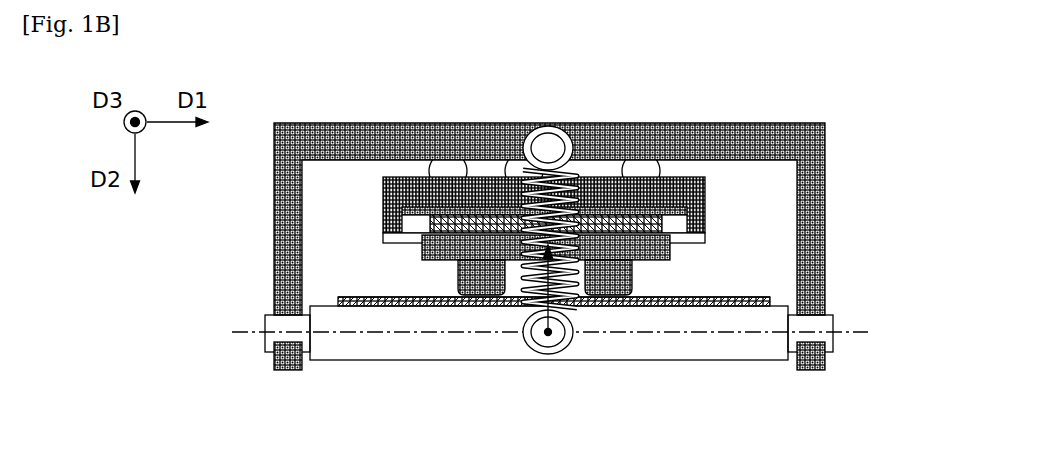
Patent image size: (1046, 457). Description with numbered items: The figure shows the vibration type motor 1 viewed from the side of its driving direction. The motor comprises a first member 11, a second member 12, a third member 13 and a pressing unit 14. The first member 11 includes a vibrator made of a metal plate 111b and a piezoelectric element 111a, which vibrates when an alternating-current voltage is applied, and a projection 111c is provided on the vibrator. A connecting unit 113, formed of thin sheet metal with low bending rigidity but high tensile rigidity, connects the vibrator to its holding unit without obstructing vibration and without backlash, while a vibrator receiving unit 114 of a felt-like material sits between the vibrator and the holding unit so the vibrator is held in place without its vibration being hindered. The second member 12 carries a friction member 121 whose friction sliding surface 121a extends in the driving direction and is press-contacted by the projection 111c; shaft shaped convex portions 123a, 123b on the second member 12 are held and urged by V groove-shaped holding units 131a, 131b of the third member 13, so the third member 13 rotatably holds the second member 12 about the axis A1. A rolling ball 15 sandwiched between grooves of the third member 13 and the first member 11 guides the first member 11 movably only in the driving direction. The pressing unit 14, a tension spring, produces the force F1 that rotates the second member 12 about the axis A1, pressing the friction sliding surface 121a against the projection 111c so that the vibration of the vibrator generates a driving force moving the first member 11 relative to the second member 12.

The vibration type motor 1 is at (258, 88).
The first member 11 is at (491, 245).
The piezoelectric element 111a is at (428, 223).
The metal plate 111b is at (422, 248).
The projection 111c is at (480, 297).
The connecting unit 113 is at (383, 237).
The vibrator receiving unit 114 is at (449, 153).
The second member 12 is at (381, 373).
The friction member 121 is at (338, 297).
The friction sliding surface 121a is at (700, 293).
The convex portion 123a is at (272, 337).
The convex portion 123b is at (823, 322).
The third member 13 is at (375, 138).
The holding unit 131a is at (273, 355).
The holding unit 131b is at (825, 357).
The pressing unit 14 is at (542, 176).
The rolling ball 15 is at (522, 171).
The axis A1 is at (535, 334).
The force F1 is at (573, 318).